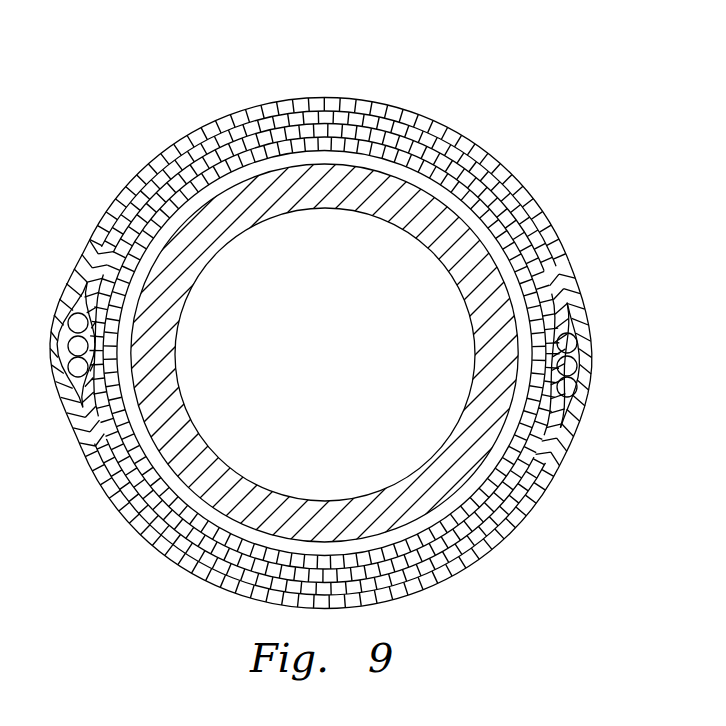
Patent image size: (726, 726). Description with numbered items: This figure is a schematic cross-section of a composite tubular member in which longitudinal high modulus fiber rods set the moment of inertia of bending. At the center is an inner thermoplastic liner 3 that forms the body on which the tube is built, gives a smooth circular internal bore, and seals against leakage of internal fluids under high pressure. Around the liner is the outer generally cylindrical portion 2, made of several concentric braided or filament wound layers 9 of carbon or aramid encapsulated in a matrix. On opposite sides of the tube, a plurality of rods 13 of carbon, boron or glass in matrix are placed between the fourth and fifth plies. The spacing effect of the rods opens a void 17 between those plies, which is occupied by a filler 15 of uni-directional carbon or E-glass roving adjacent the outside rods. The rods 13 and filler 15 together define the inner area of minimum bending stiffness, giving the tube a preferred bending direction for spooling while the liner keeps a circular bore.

The outer generally cylindrical portion 2 is at (461, 76).
The inner thermoplastic liner 3 is at (176, 380).
The braided or filament wound layers 9 is at (488, 157).
The rods 13 is at (568, 343).
The filler 15 is at (557, 307).
The void 17 is at (582, 382).